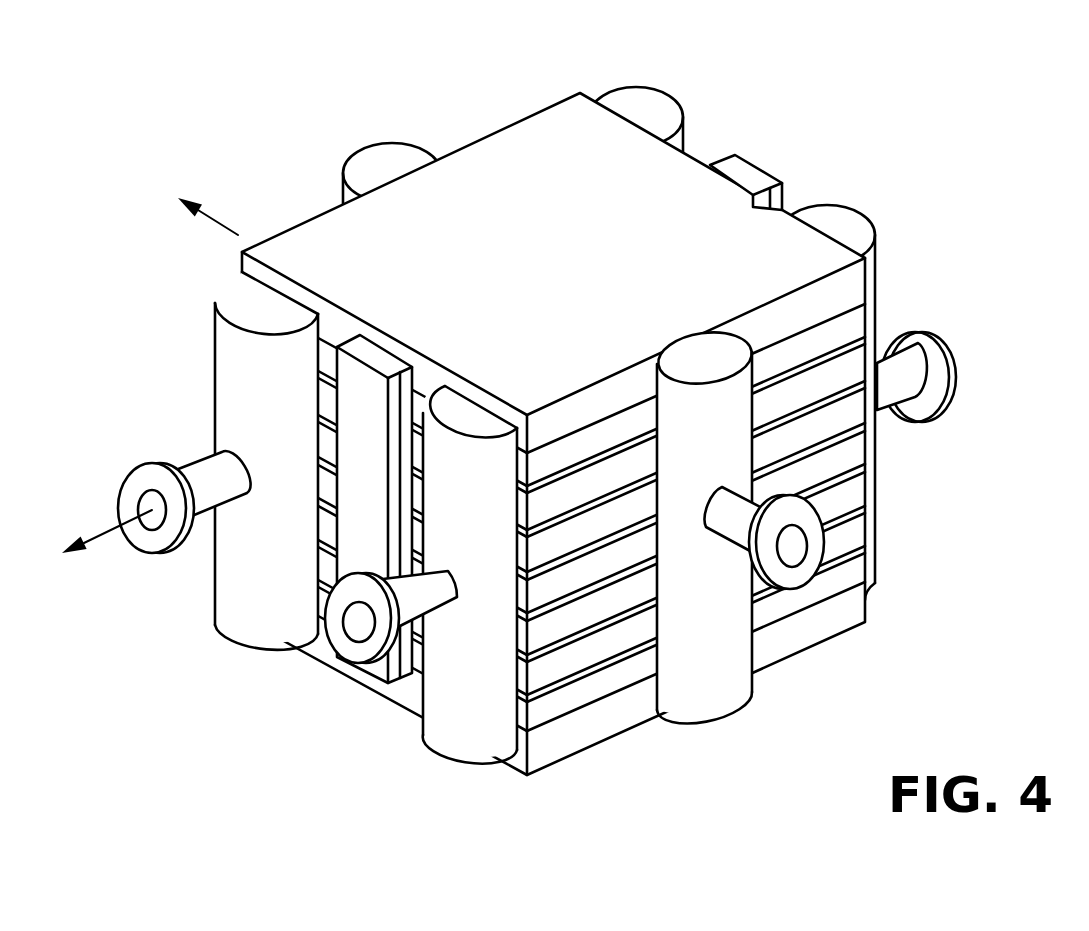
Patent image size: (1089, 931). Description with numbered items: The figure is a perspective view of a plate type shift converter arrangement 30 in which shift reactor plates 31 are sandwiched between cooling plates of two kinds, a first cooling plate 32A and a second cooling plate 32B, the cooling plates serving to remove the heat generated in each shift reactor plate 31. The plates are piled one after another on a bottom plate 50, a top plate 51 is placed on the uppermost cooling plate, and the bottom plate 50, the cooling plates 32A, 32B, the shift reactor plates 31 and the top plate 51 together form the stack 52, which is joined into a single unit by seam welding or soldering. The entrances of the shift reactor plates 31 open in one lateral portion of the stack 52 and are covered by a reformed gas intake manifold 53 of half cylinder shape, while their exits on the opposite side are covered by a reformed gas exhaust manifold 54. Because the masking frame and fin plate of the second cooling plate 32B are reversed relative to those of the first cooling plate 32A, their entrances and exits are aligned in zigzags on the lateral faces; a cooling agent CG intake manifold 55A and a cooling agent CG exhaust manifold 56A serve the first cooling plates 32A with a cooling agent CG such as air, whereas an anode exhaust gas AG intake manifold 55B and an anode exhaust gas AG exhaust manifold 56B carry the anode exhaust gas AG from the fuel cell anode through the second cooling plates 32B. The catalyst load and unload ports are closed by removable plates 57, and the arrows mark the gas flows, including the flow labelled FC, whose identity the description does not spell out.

The shift converter arrangement 30 is at (731, 118).
The shift reactor plate 31 is at (852, 362).
The first cooling plate 32A is at (852, 404).
The second cooling plate 32B is at (852, 322).
The bottom plate 50 is at (553, 763).
The top plate 51 is at (498, 148).
The stack 52 is at (540, 73).
The reformed gas intake manifold 53 is at (735, 682).
The reformed gas exhaust manifold 54 is at (373, 158).
The cooling agent CG intake manifold 55A is at (868, 215).
The anode exhaust gas AG intake manifold 55B is at (655, 98).
The cooling agent CG exhaust manifold 56A is at (214, 608).
The anode exhaust gas AG exhaust manifold 56B is at (455, 748).
The plate 57 is at (768, 168).
The anode exhaust gas AG is at (360, 623).
The cooling agent CG is at (970, 349).
The fuel/coolant flow FC is at (817, 559).